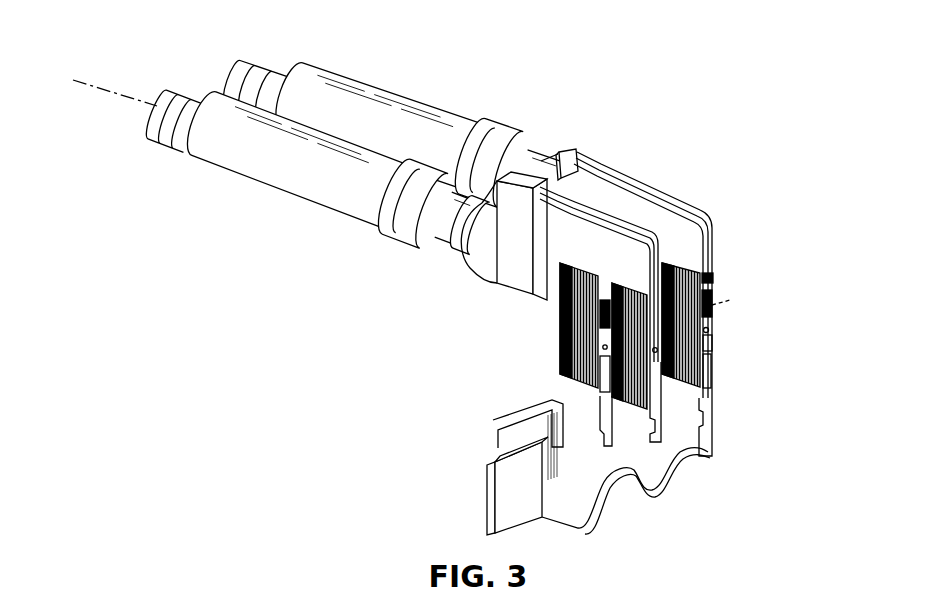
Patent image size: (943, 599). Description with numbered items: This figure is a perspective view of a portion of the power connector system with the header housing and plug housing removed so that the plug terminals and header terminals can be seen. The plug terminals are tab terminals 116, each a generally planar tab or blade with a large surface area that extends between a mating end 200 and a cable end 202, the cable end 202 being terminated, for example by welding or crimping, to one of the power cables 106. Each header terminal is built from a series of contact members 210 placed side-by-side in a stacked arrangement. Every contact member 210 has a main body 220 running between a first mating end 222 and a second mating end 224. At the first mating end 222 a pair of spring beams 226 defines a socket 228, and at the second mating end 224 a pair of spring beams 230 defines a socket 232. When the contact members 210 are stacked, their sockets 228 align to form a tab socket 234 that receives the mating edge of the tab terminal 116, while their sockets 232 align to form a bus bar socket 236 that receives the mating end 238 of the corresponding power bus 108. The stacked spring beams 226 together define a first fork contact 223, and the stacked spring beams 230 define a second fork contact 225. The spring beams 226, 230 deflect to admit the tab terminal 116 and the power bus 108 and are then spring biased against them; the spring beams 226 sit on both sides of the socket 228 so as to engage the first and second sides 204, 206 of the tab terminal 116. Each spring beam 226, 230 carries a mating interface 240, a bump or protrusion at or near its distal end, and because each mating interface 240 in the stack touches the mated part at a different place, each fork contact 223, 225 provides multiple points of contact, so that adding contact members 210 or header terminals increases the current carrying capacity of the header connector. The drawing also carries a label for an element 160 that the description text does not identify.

The power cable 106 is at (375, 107).
The power bus 108 is at (619, 510).
The tab terminal 116 is at (578, 228).
The heat sink module 160 is at (558, 318).
The mating end 200 is at (718, 210).
The cable end 202 is at (566, 146).
The first side 204 is at (714, 226).
The second side 206 is at (706, 240).
The contact member 210 is at (710, 258).
The main body 220 is at (705, 320).
The first mating end 222 is at (647, 325).
The first fork contact 223 is at (703, 265).
The second mating end 224 is at (600, 396).
The second fork contact 225 is at (714, 358).
The spring beam 226 is at (695, 292).
The socket 228 is at (720, 306).
The spring beam 230 is at (717, 382).
The socket 232 is at (718, 340).
The tab socket 234 is at (646, 384).
The bus bar socket 236 is at (648, 410).
The mating end 238 is at (718, 365).
The mating interface 240 is at (718, 280).